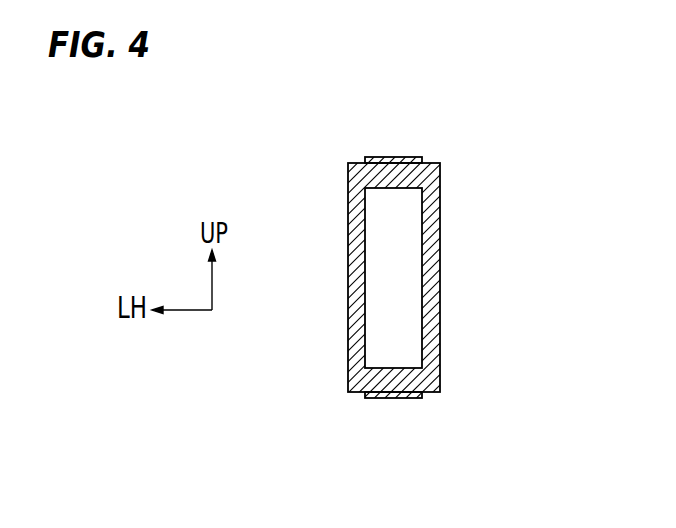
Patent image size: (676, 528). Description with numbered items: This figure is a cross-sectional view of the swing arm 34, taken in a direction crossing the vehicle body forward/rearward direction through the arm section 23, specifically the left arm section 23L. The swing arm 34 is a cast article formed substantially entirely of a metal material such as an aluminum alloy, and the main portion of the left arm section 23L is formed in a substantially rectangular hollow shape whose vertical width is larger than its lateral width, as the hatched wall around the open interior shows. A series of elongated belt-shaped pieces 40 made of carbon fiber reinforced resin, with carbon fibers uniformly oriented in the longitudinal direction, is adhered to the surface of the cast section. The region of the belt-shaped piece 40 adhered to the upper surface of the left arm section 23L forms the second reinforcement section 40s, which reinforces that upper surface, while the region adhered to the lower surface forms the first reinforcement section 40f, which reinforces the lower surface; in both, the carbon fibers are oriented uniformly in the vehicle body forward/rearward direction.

The swing arm 34 is at (394, 280).
The arm section 23 is at (394, 277).
The left arm section 23L is at (440, 268).
The belt-shaped piece 40 is at (416, 280).
The second reinforcement section 40s is at (380, 158).
The first reinforcement section 40f is at (392, 398).